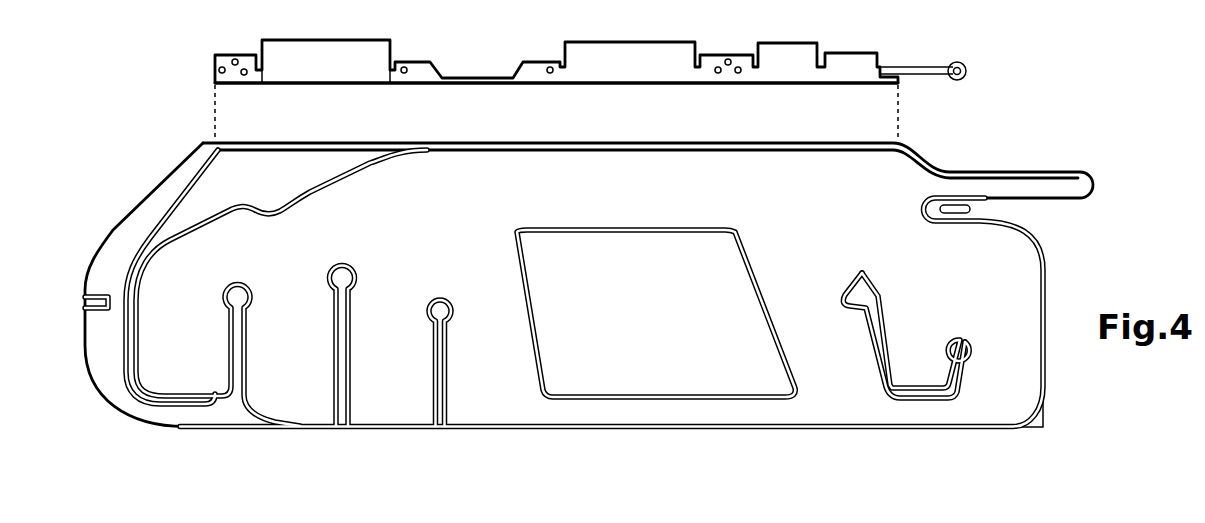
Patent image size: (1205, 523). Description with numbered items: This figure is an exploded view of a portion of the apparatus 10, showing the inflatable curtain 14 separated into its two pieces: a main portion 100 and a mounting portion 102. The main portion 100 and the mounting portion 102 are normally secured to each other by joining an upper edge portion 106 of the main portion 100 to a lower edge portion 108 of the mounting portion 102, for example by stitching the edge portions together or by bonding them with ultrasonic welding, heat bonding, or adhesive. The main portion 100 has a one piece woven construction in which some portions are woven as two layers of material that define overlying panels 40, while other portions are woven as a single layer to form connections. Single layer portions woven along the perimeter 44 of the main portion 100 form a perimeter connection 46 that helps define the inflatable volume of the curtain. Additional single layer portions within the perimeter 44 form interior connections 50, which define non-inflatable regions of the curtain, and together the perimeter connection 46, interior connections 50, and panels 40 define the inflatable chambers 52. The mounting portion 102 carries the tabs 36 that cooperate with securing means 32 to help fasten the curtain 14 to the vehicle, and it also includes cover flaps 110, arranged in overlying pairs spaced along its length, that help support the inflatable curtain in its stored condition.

The assembly 10 is at (112, 82).
The inflatable curtain 14 is at (158, 70).
The tabs 36 is at (218, 55).
The cover flaps 110 is at (357, 58).
The mounting portion 102 is at (605, 54).
The lower edge portion 108 is at (607, 83).
The upper edge portion 106 is at (735, 148).
The connector 32 is at (294, 5).
The interior connections 50 is at (243, 282).
The inflatable chambers 52 is at (432, 423).
The panels 40 is at (487, 365).
The perimeter 44 is at (575, 428).
The perimeter connection 46 is at (652, 428).
The main portion 100 is at (723, 355).